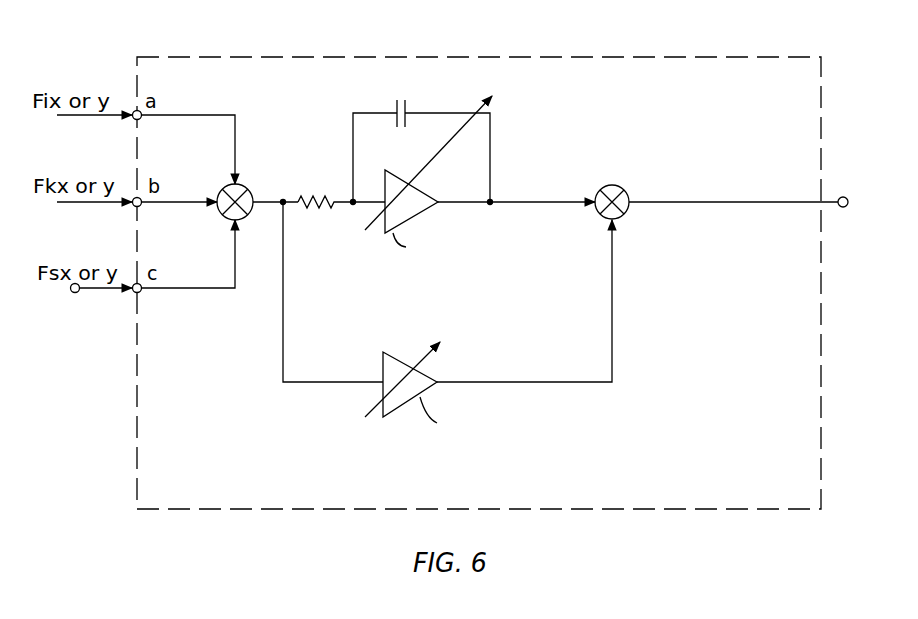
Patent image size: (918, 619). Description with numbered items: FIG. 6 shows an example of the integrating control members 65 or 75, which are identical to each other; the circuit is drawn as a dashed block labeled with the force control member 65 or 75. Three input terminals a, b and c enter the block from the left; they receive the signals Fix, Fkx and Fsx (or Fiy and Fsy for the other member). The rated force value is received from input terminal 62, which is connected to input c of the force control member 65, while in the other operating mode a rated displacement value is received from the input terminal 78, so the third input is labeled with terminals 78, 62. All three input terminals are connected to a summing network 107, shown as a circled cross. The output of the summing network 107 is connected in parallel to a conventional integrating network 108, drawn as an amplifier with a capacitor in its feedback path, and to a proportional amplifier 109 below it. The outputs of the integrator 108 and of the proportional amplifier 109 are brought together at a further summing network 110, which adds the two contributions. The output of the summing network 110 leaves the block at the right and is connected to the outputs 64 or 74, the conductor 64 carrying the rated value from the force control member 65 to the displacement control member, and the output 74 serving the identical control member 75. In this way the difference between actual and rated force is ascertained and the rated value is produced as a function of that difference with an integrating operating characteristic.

The force control member 65 is at (479, 261).
The integrating control member 75 is at (790, 24).
The input terminal 78 is at (87, 308).
The input terminal 62 is at (73, 293).
The summing network 107 is at (246, 191).
The integrating network 108 is at (477, 186).
The proportional amplifier 109 is at (431, 372).
The summing network 110 is at (626, 187).
The conductor 64 is at (740, 164).
The output 74 is at (740, 164).